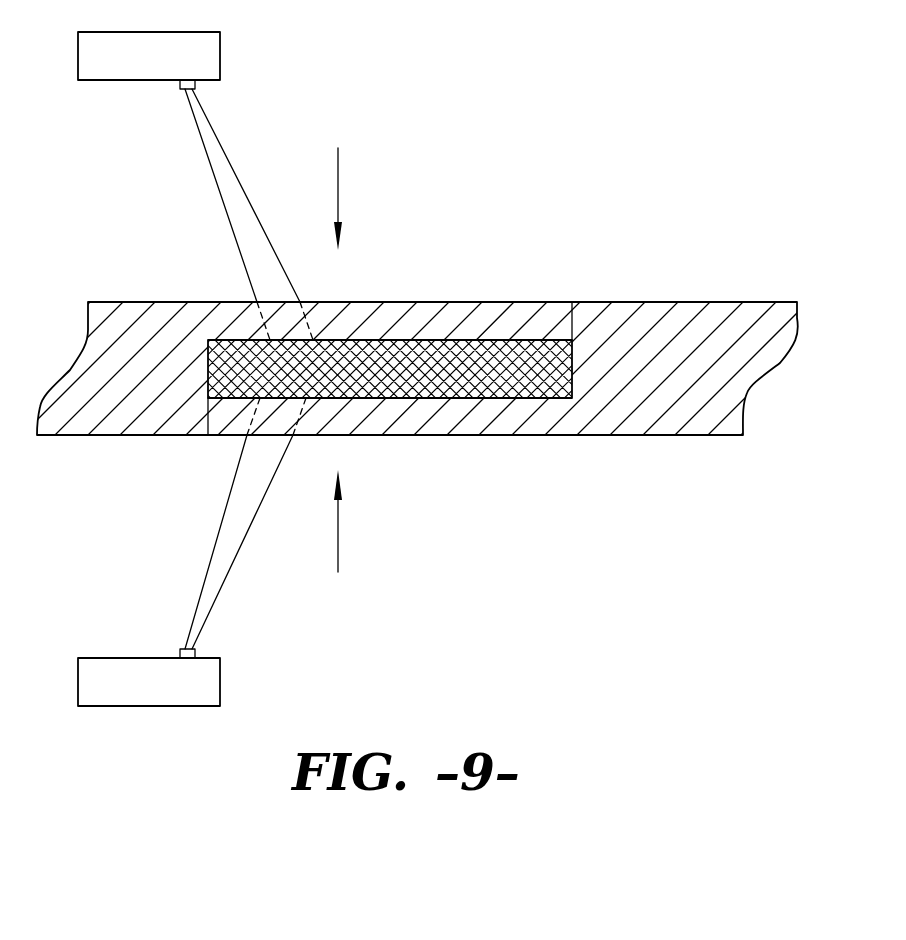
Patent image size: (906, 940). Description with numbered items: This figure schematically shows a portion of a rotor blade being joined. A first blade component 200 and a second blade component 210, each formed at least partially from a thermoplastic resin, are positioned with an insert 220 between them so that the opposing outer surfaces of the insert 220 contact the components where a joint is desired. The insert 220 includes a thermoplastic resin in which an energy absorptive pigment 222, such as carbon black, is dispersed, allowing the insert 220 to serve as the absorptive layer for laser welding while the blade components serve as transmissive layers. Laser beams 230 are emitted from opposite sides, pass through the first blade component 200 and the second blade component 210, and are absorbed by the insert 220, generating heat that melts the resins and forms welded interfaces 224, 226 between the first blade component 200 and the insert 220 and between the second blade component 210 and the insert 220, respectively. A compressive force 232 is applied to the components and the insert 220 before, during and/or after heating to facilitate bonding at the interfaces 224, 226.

The first blade component 200 is at (167, 296).
The second blade component 210 is at (654, 286).
The insert 220 is at (442, 357).
The energy absorptive pigment 222 is at (380, 349).
The welded interface 224 is at (501, 332).
The welded interface 226 is at (490, 406).
The laser beam 230 is at (235, 165).
The compressive force 232 is at (340, 178).